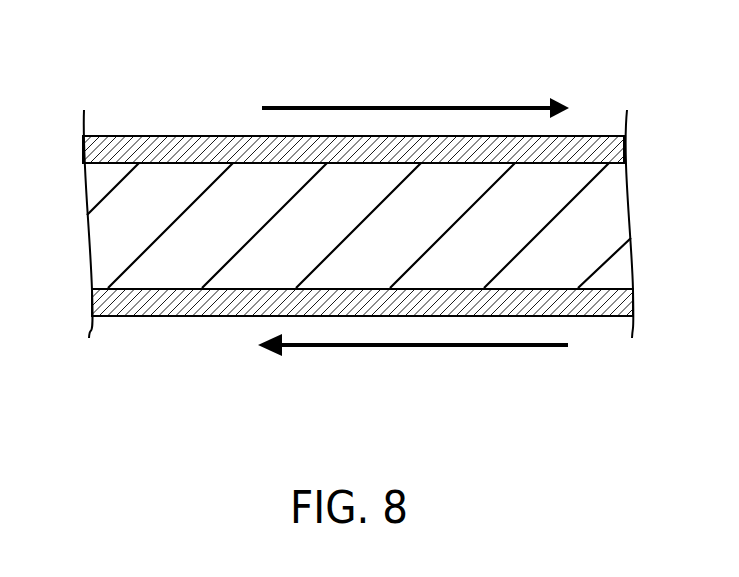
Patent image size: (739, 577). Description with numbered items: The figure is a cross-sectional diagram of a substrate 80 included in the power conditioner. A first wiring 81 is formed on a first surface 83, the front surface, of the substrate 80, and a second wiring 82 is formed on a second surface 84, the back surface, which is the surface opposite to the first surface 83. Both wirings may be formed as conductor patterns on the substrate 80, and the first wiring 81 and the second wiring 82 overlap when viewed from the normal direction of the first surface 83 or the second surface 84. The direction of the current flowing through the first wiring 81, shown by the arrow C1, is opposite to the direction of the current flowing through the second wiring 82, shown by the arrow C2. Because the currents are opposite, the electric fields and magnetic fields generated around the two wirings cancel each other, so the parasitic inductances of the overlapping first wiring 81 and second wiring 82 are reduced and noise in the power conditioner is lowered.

The substrate 80 is at (117, 243).
The first wiring 81 is at (214, 150).
The second wiring 82 is at (214, 298).
The first surface 83 is at (560, 165).
The second surface 84 is at (560, 288).
The arrow C1 is at (423, 105).
The arrow C2 is at (415, 350).